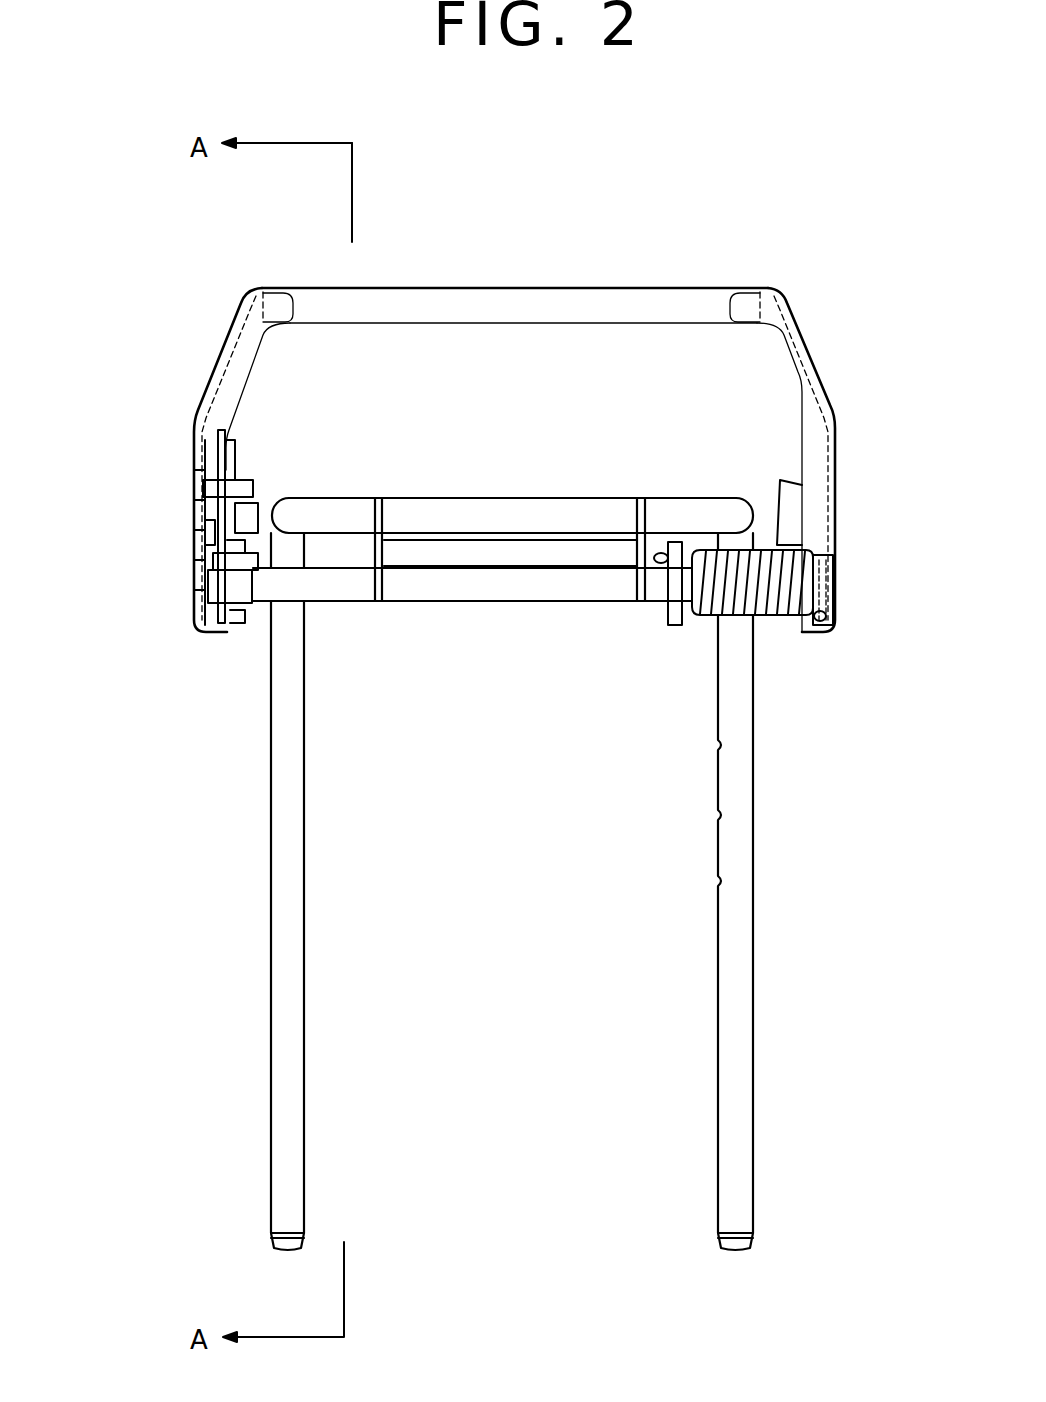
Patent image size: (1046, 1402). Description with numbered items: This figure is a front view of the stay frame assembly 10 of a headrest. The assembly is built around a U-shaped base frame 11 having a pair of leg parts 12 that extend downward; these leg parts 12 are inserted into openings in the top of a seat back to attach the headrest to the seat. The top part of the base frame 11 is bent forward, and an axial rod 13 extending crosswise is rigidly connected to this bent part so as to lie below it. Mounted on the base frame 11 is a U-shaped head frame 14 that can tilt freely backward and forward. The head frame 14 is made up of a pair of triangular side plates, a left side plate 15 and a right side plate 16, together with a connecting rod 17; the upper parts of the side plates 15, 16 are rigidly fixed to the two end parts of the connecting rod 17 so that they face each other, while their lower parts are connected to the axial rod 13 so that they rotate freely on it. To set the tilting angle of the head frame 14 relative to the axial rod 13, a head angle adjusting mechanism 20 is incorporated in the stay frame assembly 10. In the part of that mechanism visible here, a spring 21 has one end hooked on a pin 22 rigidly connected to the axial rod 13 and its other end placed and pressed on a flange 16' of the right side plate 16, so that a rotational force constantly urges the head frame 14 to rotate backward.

The stay frame assembly 10 is at (175, 783).
The base frame 11 is at (785, 756).
The leg parts 12 is at (297, 926).
The axial rod 13 is at (470, 603).
The head frame 14 is at (730, 243).
The left side plate 15 is at (233, 323).
The right side plate 16 is at (845, 361).
The flange 16' is at (848, 627).
The connecting rod 17 is at (503, 300).
The head angle adjusting mechanism 20 is at (257, 456).
The spring 21 is at (767, 617).
The pin 22 is at (668, 613).